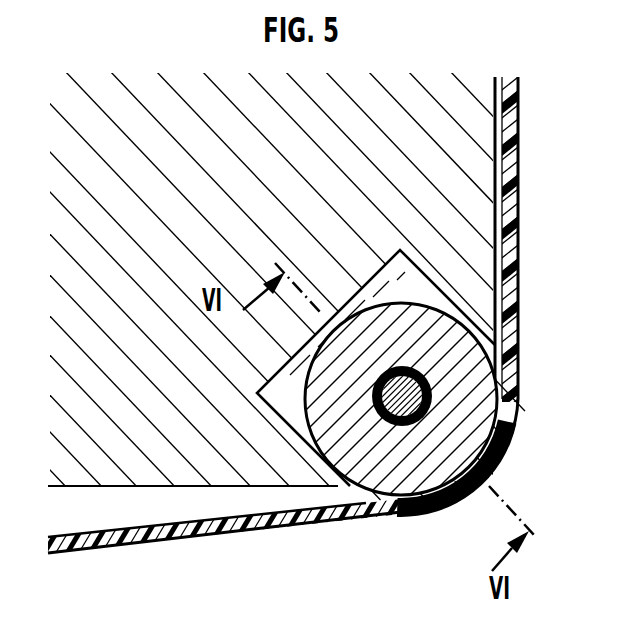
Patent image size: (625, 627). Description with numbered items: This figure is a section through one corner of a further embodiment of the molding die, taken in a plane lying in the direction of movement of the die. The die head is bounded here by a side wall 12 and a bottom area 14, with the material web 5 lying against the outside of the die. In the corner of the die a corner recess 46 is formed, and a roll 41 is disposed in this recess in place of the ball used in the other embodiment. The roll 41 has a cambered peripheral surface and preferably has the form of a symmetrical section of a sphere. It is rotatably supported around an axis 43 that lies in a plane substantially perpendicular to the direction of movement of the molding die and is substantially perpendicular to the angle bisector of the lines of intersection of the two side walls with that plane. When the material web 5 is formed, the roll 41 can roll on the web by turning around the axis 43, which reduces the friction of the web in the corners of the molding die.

The material web 5 is at (506, 220).
The side wall 12 is at (495, 162).
The bottom area 14 is at (235, 488).
The roll 41 is at (479, 416).
The axis 43 is at (432, 385).
The corner recess 46 is at (327, 332).